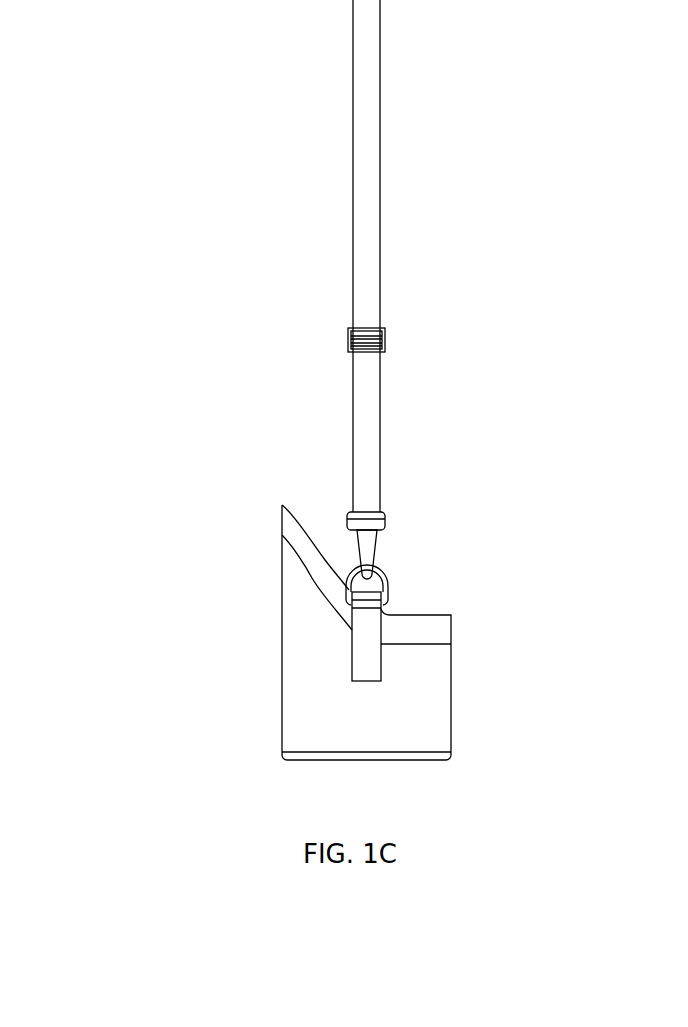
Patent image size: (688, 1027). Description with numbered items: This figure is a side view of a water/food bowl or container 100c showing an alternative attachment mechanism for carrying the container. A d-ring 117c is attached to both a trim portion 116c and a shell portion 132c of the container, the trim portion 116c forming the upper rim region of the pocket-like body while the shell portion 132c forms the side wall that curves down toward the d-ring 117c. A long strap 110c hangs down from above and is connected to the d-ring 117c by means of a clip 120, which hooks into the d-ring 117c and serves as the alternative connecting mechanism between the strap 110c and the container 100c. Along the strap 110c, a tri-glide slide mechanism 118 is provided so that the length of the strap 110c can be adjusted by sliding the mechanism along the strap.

The bowl or container 100c is at (148, 92).
The strap 110c is at (363, 392).
The tri-glide slide mechanism 118 is at (383, 345).
The clip 120 is at (368, 555).
The d-ring 117c is at (382, 608).
The trim portion 116c is at (423, 641).
The shell portion 132c is at (320, 653).